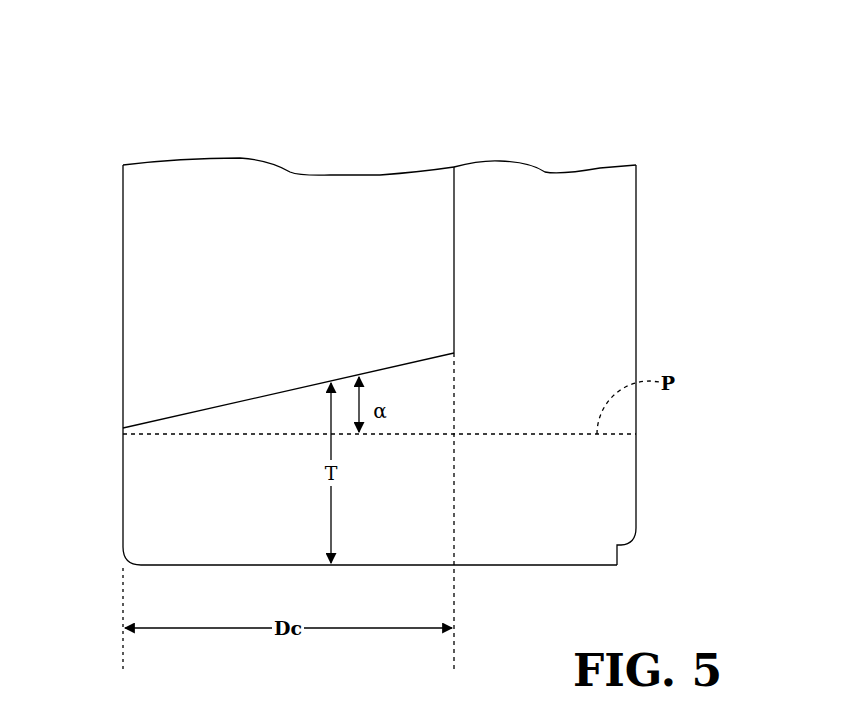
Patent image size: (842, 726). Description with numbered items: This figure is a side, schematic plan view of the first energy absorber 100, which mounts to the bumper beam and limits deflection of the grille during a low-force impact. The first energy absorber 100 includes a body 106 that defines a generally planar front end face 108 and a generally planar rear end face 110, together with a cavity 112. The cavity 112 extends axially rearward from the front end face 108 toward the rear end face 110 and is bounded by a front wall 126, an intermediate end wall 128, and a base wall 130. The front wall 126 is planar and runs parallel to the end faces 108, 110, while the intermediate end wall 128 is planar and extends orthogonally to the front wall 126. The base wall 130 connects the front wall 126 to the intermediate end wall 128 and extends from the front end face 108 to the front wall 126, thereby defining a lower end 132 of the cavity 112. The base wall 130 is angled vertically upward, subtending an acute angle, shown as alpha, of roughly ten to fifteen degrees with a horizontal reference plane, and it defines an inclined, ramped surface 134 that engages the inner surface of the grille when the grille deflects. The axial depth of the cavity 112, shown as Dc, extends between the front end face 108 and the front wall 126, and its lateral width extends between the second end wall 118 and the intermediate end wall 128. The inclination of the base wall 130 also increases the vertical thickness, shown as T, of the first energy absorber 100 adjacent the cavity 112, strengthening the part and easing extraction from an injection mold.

The first energy absorber 100 is at (490, 66).
The body 106 is at (543, 158).
The front end face 108 is at (123, 230).
The rear end face 110 is at (636, 253).
The cavity 112 is at (283, 194).
The second end wall 118 is at (587, 335).
The front wall 126 is at (452, 203).
The intermediate end wall 128 is at (145, 192).
The base wall 130 is at (251, 394).
The lower end 132 is at (155, 364).
The inclined ramped surface 134 is at (397, 365).